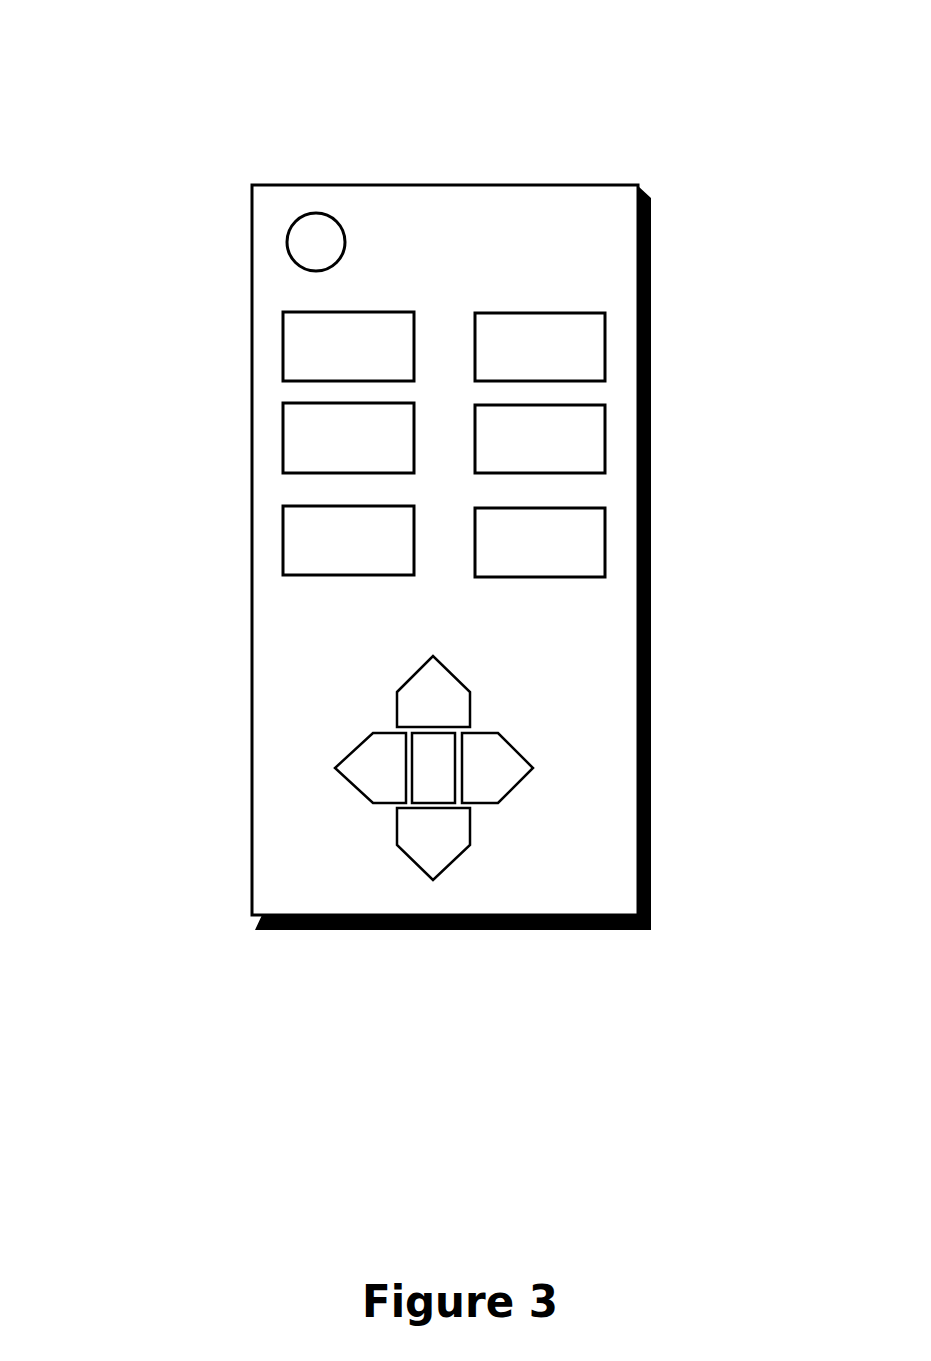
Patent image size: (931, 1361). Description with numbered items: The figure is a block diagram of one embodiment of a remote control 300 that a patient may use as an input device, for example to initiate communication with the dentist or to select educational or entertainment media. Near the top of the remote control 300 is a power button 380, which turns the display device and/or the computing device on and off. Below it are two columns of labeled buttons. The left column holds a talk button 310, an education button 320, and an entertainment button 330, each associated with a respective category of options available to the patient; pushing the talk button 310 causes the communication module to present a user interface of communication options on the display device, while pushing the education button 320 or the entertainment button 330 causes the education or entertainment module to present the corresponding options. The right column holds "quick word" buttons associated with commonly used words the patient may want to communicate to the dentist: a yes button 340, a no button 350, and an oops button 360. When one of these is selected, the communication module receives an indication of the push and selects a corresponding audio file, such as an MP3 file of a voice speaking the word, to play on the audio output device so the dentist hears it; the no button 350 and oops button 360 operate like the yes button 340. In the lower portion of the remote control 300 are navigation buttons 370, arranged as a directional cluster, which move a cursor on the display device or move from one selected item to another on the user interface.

The remote control 300 is at (510, 185).
The power button 380 is at (287, 242).
The talk button 310 is at (283, 346).
The education button 320 is at (283, 438).
The entertainment button 330 is at (283, 541).
The yes button 340 is at (605, 357).
The no button 350 is at (605, 449).
The oops button 360 is at (605, 551).
The navigation buttons 370 is at (565, 760).